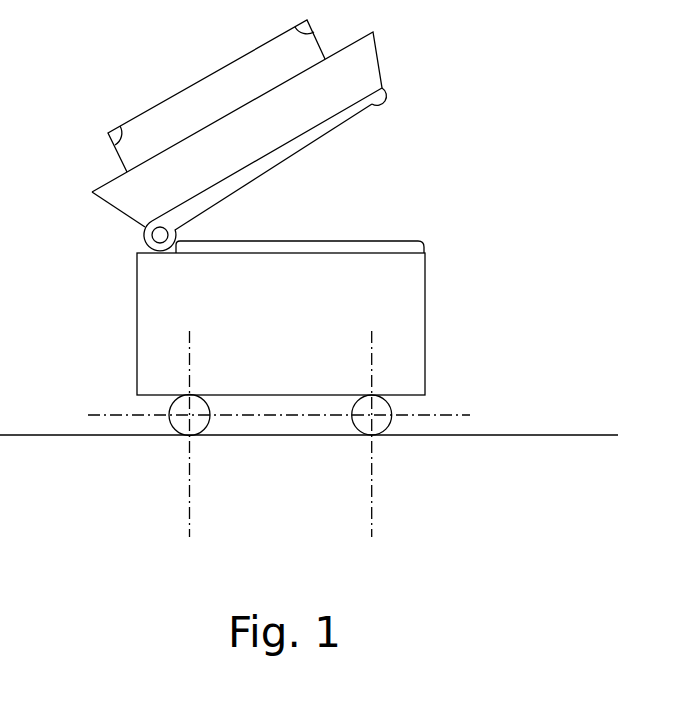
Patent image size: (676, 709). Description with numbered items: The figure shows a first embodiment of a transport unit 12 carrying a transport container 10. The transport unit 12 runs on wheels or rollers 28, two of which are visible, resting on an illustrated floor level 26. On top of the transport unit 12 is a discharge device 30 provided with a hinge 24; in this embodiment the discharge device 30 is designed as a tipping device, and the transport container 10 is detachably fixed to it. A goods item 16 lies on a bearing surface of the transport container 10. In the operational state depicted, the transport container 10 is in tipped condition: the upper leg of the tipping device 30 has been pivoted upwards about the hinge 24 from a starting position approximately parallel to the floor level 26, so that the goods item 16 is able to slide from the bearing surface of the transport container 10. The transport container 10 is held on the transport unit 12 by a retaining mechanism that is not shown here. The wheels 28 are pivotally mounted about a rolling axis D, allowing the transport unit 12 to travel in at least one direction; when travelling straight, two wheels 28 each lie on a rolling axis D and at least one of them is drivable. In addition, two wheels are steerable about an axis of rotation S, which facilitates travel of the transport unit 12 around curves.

The transport container 10 is at (367, 68).
The transport unit 12 is at (412, 307).
The goods item 16 is at (163, 115).
The hinge 24 is at (158, 236).
The floor level 26 is at (594, 427).
The wheels or rollers 28 is at (213, 425).
The discharge device 30 is at (305, 138).
The rolling axis D is at (93, 428).
The axis of rotation S is at (180, 470).